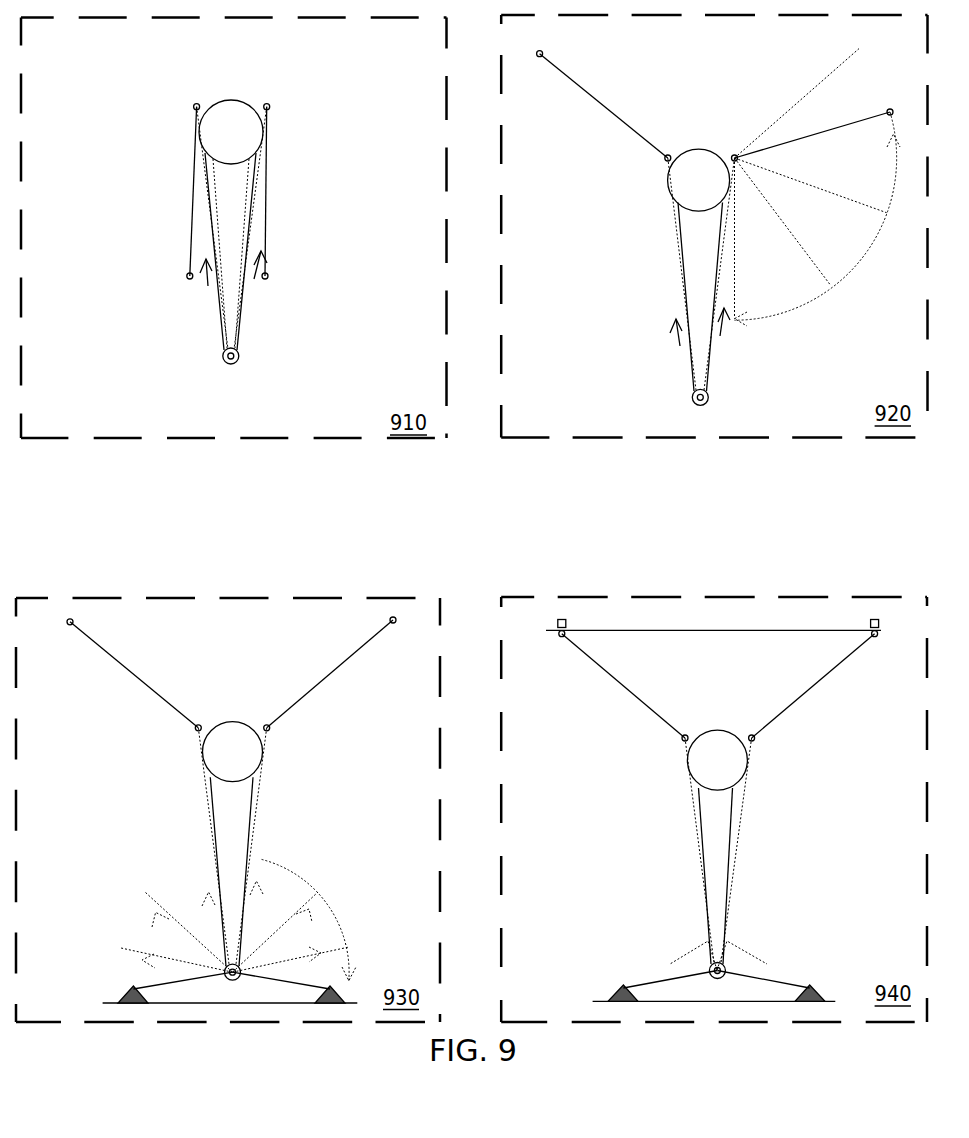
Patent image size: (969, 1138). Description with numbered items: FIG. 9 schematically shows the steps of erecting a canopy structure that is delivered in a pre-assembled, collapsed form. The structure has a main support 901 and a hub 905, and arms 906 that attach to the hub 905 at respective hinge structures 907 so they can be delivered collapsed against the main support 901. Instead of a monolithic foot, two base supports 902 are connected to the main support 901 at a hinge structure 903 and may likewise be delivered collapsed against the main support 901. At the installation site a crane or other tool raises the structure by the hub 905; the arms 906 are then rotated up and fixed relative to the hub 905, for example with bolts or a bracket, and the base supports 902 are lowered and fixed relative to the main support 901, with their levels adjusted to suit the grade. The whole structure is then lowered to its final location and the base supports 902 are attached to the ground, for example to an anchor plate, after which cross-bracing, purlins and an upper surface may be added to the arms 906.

The main support 901 is at (215, 224).
The base supports 902 is at (212, 307).
The hinge structure 903 is at (220, 357).
The hub 905 is at (218, 98).
The arms 906 is at (268, 195).
The hinge structures 907 is at (191, 109).